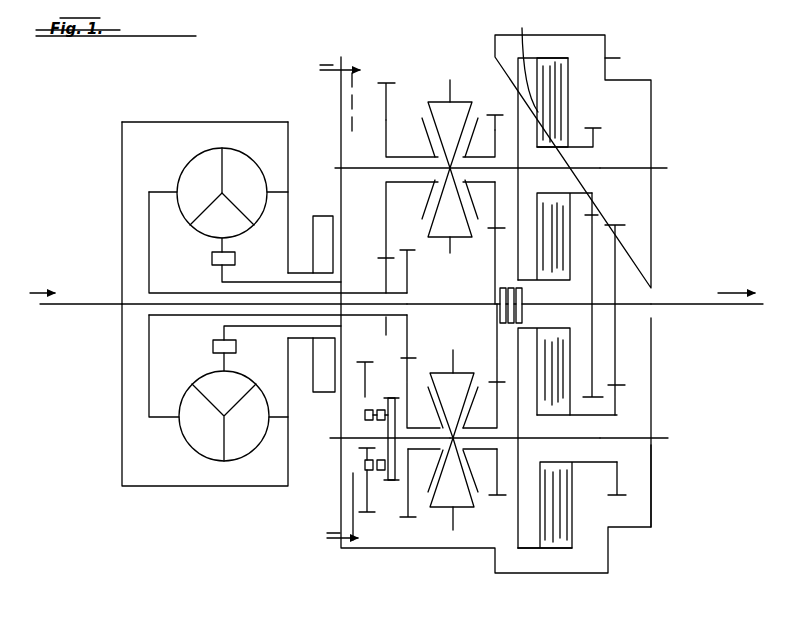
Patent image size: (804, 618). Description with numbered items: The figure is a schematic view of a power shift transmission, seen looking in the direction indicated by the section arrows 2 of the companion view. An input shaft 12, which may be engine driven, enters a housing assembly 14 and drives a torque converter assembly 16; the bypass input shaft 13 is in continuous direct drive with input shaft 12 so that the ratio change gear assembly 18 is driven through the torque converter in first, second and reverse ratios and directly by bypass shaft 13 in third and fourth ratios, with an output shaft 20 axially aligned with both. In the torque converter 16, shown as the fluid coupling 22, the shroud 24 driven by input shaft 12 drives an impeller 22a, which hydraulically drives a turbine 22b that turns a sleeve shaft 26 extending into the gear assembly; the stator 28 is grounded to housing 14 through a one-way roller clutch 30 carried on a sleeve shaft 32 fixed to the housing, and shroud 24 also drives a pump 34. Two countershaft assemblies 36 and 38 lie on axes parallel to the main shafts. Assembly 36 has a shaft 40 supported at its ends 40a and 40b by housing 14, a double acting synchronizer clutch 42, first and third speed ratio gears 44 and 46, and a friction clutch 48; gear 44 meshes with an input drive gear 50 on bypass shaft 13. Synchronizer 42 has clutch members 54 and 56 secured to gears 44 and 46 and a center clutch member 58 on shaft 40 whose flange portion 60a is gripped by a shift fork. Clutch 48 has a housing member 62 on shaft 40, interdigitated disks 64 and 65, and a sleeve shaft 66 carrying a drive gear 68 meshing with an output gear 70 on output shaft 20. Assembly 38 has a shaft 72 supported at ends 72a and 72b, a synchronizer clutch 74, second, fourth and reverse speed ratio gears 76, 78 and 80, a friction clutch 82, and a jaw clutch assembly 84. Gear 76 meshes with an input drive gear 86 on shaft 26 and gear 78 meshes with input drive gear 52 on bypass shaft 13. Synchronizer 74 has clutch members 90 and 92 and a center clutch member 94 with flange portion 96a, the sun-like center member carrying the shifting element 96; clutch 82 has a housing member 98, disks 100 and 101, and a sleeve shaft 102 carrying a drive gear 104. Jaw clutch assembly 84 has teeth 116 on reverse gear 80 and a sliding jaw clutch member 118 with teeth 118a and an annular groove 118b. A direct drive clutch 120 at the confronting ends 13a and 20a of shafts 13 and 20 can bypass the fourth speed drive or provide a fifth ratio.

The rotation direction arrow 2 is at (368, 70).
The input shaft 12 is at (80, 303).
The bypass input shaft 13 is at (140, 303).
The end of bypass shaft 13a is at (497, 303).
The housing assembly 14 is at (422, 54).
The torque converter assembly 16 is at (146, 118).
The ratio change gear assembly 18 is at (448, 76).
The output shaft 20 is at (713, 306).
The end of output shaft 20a is at (525, 308).
The hydraulic pump 22 is at (196, 155).
The impeller 22a is at (250, 153).
The turbine 22b is at (180, 175).
The shroud 24 is at (192, 121).
The sleeve shaft 26 is at (182, 283).
The stator 28 is at (205, 235).
The one-way roller clutch 30 is at (236, 258).
The sleeve shaft 32 is at (240, 270).
The pump 34 is at (320, 216).
The countershaft assembly 36 is at (608, 158).
The countershaft assembly 38 is at (640, 452).
The shaft 40 is at (612, 168).
The shaft end 40a is at (338, 167).
The shaft end 40b is at (655, 168).
The double acting synchronizer clutch 42 is at (438, 96).
The first speed ratio gear 44 is at (378, 80).
The third speed ratio gear 46 is at (500, 96).
The hydraulically actuated friction clutch 48 is at (534, 52).
The input drive gear 50 is at (390, 268).
The input drive gear 52 is at (488, 258).
The clutch member 54 is at (426, 130).
The clutch member 56 is at (470, 128).
The center clutch member 58 is at (462, 99).
The flange portion 60a is at (447, 246).
The housing member 62 is at (516, 248).
The disks 64 is at (531, 150).
The disks 65 is at (556, 62).
The sleeve shaft 66 is at (571, 190).
The drive gear 68 is at (596, 126).
The output gear 70 is at (595, 240).
The shaft 72 is at (624, 438).
The shaft end 72a is at (343, 437).
The shaft end 72b is at (656, 438).
The double acting synchronizer clutch 74 is at (434, 518).
The second speed ratio gear 76 is at (418, 524).
The fourth speed ratio gear 78 is at (501, 498).
The reverse speed ratio gear 80 is at (365, 488).
The hydraulically actuated friction clutch 82 is at (543, 555).
The jaw clutch assembly 84 is at (380, 476).
The input drive gear 86 is at (410, 334).
The clutch member 90 is at (432, 488).
The clutch member 92 is at (482, 480).
The center clutch member 94 is at (467, 512).
The sun gear 96 is at (448, 510).
The flange portion 96a is at (448, 358).
The housing member 98 is at (517, 352).
The disks 100 is at (541, 488).
The disks 101 is at (572, 490).
The sleeve shaft 102 is at (618, 250).
The drive gear 104 is at (624, 497).
The jaw clutch teeth 116 is at (376, 420).
The jaw clutch member 118 is at (425, 400).
The jaw clutch teeth 118a is at (385, 398).
The annular groove 118b is at (392, 397).
The direct drive clutch 120 is at (526, 295).